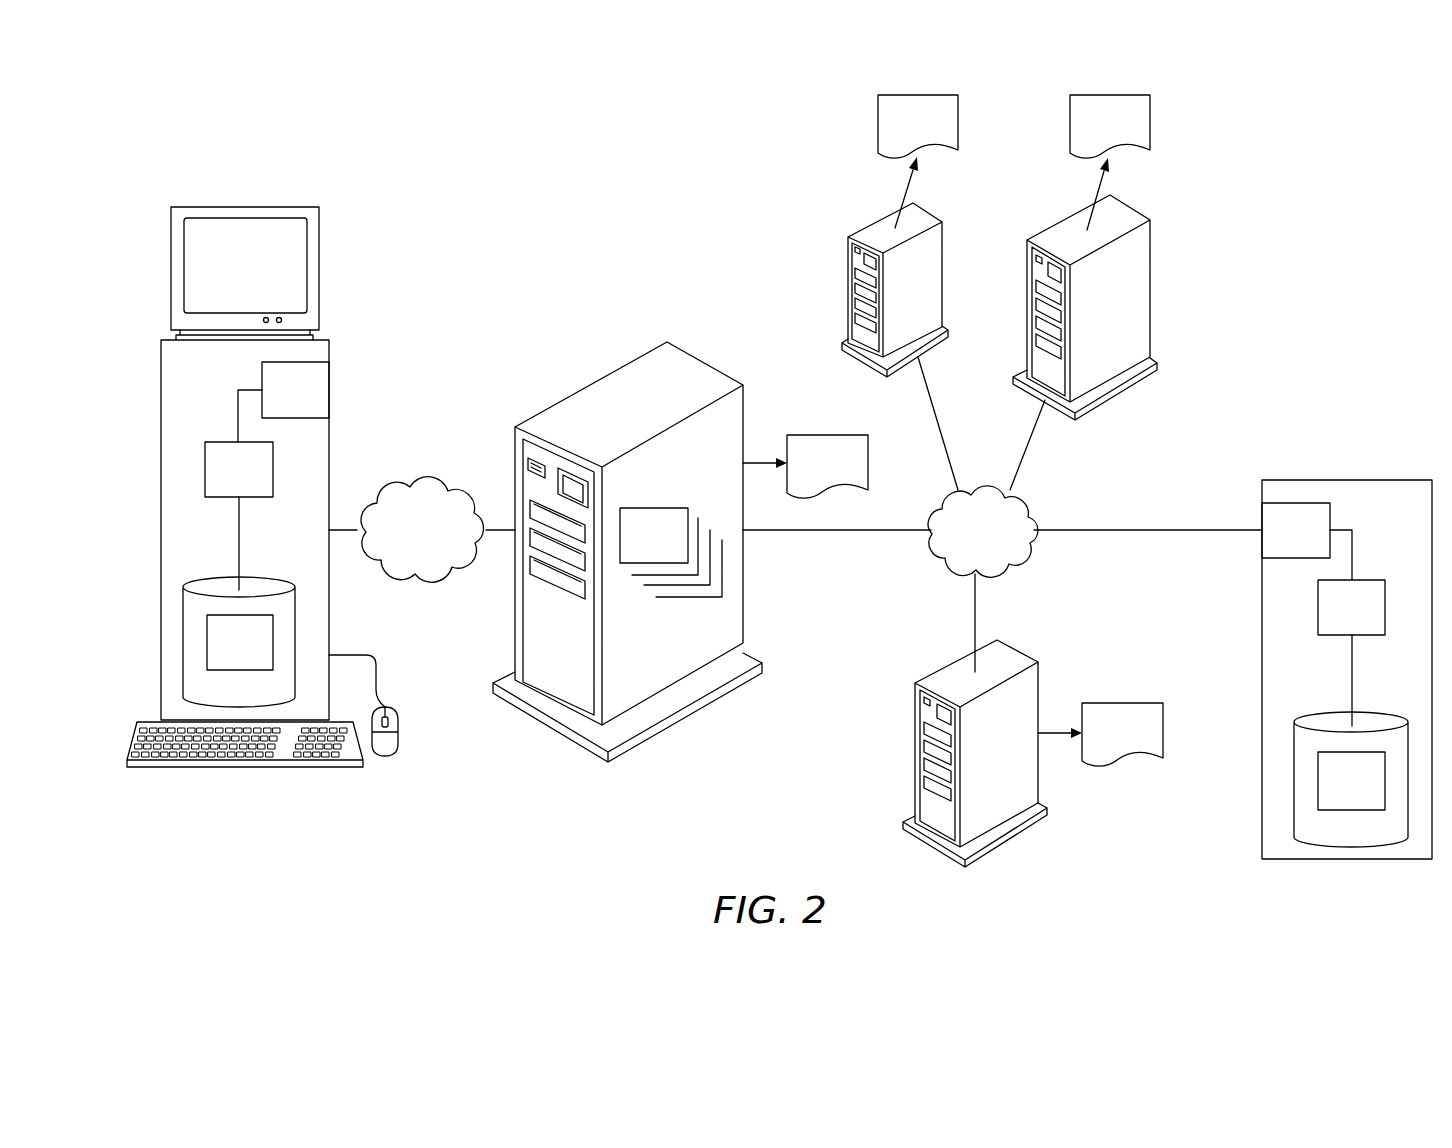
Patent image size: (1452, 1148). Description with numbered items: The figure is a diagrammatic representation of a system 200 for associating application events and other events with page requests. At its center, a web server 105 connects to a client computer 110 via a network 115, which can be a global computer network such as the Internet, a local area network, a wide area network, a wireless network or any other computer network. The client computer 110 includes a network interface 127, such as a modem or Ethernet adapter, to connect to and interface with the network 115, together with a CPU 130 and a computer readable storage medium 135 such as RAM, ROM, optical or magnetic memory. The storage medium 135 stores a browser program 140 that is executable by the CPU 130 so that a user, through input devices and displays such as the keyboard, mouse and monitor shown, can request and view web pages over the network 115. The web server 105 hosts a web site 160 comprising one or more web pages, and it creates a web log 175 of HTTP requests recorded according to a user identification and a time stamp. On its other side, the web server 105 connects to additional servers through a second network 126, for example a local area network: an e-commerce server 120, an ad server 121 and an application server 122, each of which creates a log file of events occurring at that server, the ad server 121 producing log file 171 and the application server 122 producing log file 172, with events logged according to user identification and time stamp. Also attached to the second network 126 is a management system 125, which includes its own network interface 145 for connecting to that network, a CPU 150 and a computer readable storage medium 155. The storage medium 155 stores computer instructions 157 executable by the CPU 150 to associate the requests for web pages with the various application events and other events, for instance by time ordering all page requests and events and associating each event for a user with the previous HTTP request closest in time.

The system 200 is at (540, 165).
The client computer 110 is at (225, 198).
The network interface 127 is at (316, 404).
The CPU 130 is at (259, 482).
The computer readable storage medium 135 is at (213, 571).
The browser program 140 is at (260, 654).
The network 115 is at (443, 543).
The web server 105 is at (590, 383).
The web site 160 is at (675, 548).
The web log 175 is at (828, 435).
The e-commerce server 120 is at (882, 219).
The application server 122 is at (1127, 206).
The log file 171 is at (878, 122).
The log file 172 is at (1150, 125).
The second network 126 is at (1001, 543).
The ad server 121 is at (915, 733).
The management system 125 is at (1387, 471).
The network interface 145 is at (1316, 542).
The CPU 150 is at (1372, 620).
The computer readable storage medium 155 is at (1378, 707).
The computer instructions 157 is at (1372, 795).